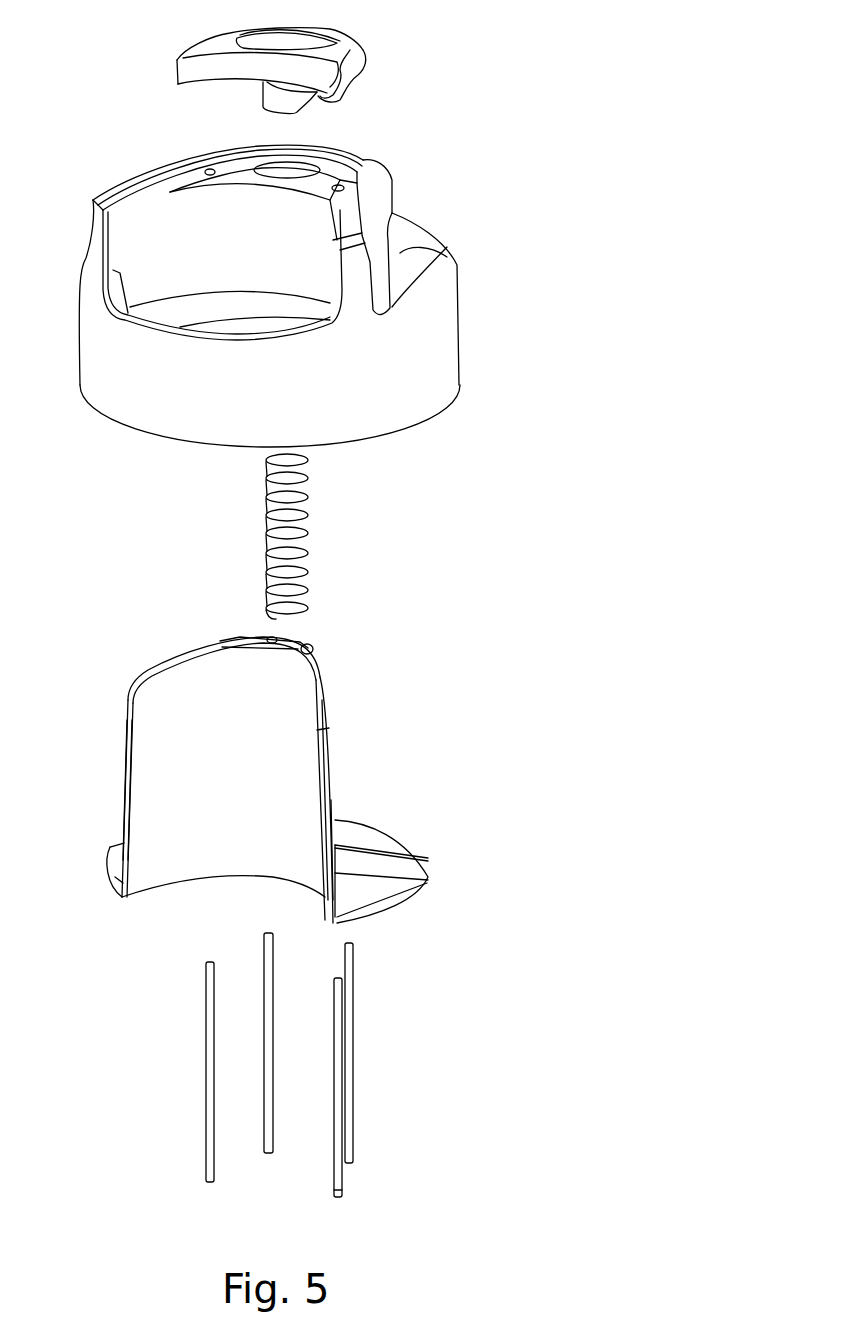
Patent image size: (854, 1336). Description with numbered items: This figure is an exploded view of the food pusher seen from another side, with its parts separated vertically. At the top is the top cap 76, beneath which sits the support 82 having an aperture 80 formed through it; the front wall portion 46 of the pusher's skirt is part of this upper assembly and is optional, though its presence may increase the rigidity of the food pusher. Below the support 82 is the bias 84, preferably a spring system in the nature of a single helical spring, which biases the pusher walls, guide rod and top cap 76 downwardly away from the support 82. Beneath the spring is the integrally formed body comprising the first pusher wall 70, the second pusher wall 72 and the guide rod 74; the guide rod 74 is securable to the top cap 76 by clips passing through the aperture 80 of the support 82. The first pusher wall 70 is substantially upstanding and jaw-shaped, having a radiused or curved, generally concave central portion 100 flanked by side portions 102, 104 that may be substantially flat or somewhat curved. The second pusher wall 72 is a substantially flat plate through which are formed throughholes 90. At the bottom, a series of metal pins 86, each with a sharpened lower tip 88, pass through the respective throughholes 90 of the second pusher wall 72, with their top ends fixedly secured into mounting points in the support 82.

The front wall portion 46 is at (185, 408).
The first pusher wall 70 is at (187, 845).
The second pusher wall 72 is at (383, 895).
The guide rod 74 is at (312, 643).
The top cap 76 is at (357, 44).
The aperture 80 is at (287, 173).
The support 82 is at (440, 357).
The bias 84 is at (310, 542).
The metal pins 86 is at (353, 1098).
The sharpened lower tip 88 is at (340, 1197).
The throughholes 90 is at (347, 840).
The central portion 100 is at (267, 700).
The side portion 102 is at (152, 735).
The side portion 104 is at (325, 772).